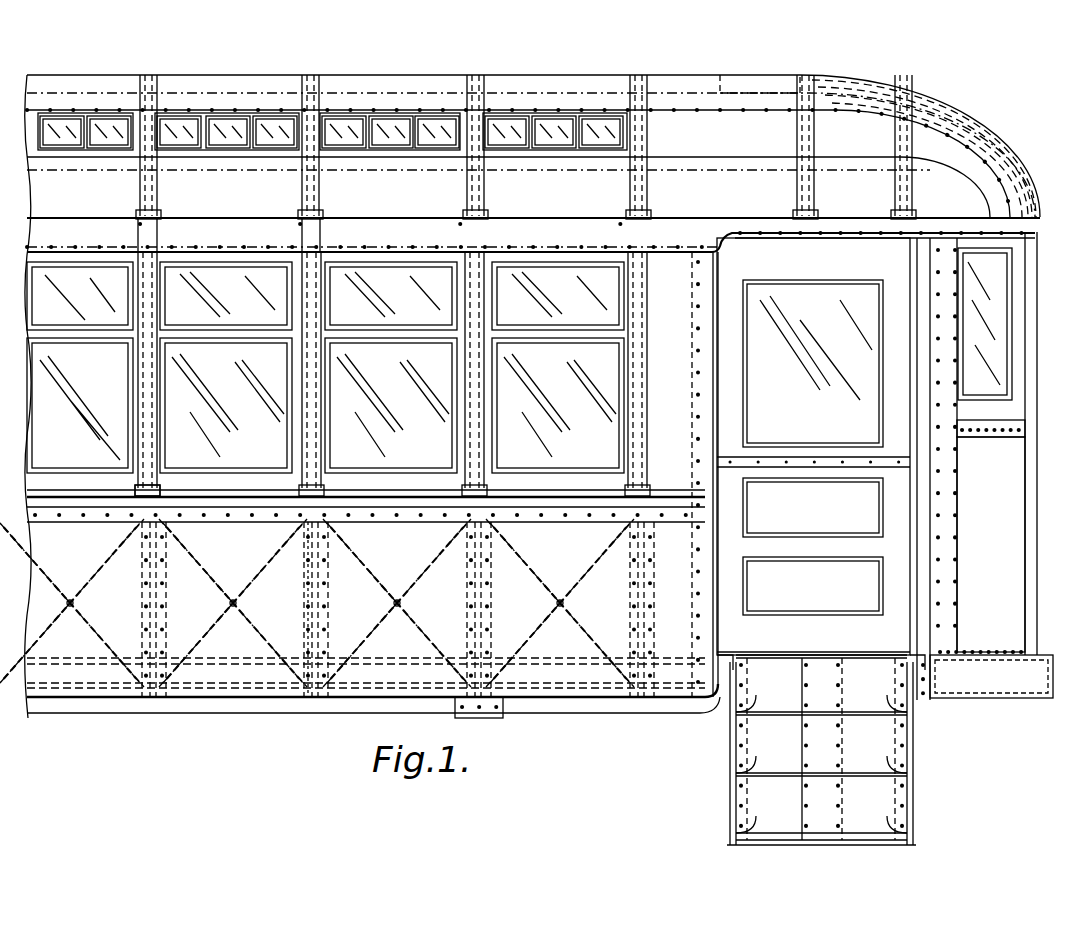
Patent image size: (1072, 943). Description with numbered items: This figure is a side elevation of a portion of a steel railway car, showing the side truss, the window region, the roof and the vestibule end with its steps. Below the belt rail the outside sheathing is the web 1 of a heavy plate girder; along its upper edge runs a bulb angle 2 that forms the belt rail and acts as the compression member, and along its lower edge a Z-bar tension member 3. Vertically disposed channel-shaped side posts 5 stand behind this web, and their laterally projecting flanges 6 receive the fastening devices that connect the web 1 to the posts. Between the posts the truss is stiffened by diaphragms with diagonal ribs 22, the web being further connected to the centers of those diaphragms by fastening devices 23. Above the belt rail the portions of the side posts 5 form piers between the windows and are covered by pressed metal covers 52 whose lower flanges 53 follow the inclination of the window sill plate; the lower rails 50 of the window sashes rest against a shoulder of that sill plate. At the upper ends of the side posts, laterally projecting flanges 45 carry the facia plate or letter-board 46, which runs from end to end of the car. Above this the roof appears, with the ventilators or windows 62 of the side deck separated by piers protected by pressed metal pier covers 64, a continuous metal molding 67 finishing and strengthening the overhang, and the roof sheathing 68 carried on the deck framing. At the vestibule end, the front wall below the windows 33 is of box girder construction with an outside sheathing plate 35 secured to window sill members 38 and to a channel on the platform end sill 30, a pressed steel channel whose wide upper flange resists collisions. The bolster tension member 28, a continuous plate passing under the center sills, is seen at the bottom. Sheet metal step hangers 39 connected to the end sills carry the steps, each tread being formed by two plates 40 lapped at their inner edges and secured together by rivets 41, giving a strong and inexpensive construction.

The web of the plate girder 1 is at (366, 637).
The bulb angle 2 is at (412, 520).
The tension member 3 is at (590, 710).
The side posts 5 is at (330, 600).
The laterally projecting flanges 6 is at (330, 626).
The ribs 22 is at (582, 586).
The fastening devices 23 is at (240, 603).
The tension member of the bolster 28 is at (503, 718).
The platform end sill 30 is at (988, 677).
The windows 33 is at (877, 466).
The outside sheathing plate 35 is at (982, 544).
The window sill members 38 is at (1000, 442).
The step hangers 39 is at (734, 757).
The plates 40 is at (821, 747).
The rivets 41 is at (840, 805).
The laterally projecting flanges 45 is at (490, 233).
The facia plate 46 is at (138, 238).
The lower rails of the window sashes 50 is at (401, 478).
The pressed metal covers 52 is at (153, 420).
The flanges 53 is at (168, 494).
The ventilators or windows 62 is at (432, 136).
The pressed metal pier covers 64 is at (145, 143).
The continuous metal molding 67 is at (252, 112).
The roof sheathing 68 is at (518, 146).